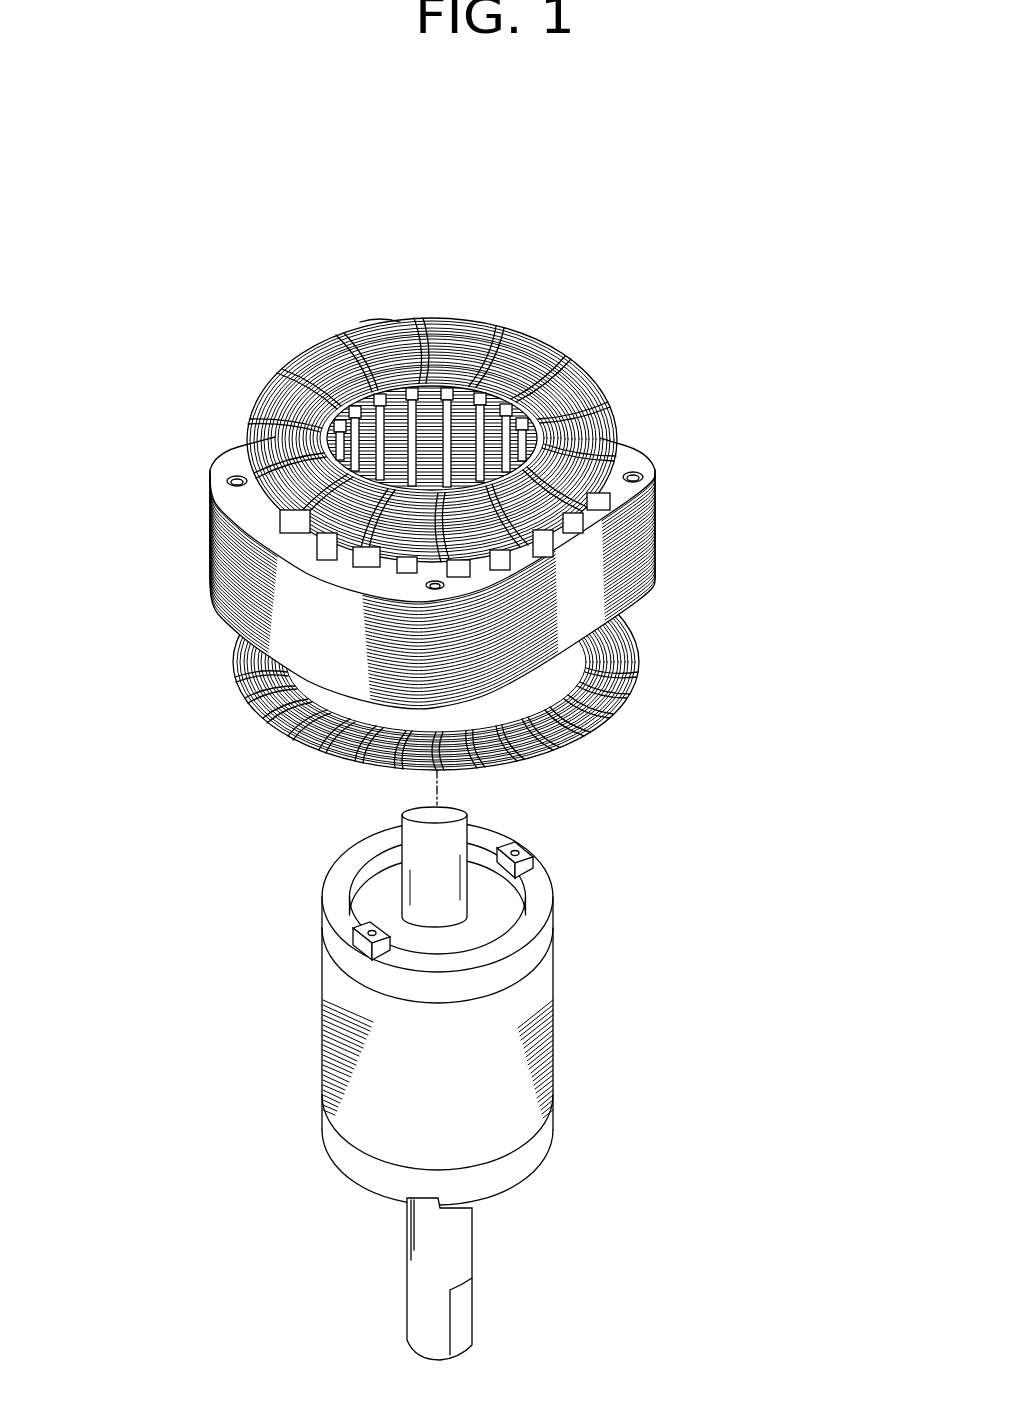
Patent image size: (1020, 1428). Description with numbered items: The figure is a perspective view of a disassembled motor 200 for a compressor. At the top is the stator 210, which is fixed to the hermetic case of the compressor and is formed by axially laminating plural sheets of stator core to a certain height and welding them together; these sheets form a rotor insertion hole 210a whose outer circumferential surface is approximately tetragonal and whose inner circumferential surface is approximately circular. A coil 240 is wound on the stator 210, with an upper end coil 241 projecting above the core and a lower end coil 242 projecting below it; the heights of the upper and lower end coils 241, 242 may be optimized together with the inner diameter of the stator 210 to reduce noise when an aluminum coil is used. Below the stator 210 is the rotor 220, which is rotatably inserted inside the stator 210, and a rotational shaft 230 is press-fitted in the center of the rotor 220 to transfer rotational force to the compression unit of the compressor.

The motor 200 is at (170, 685).
The stator 210 is at (645, 434).
The rotor insertion hole 210a is at (380, 316).
The rotor 220 is at (568, 1005).
The rotational shaft 230 is at (484, 1259).
The coil 240 is at (582, 334).
The upper end coil 241 is at (477, 318).
The lower end coil 242 is at (627, 673).